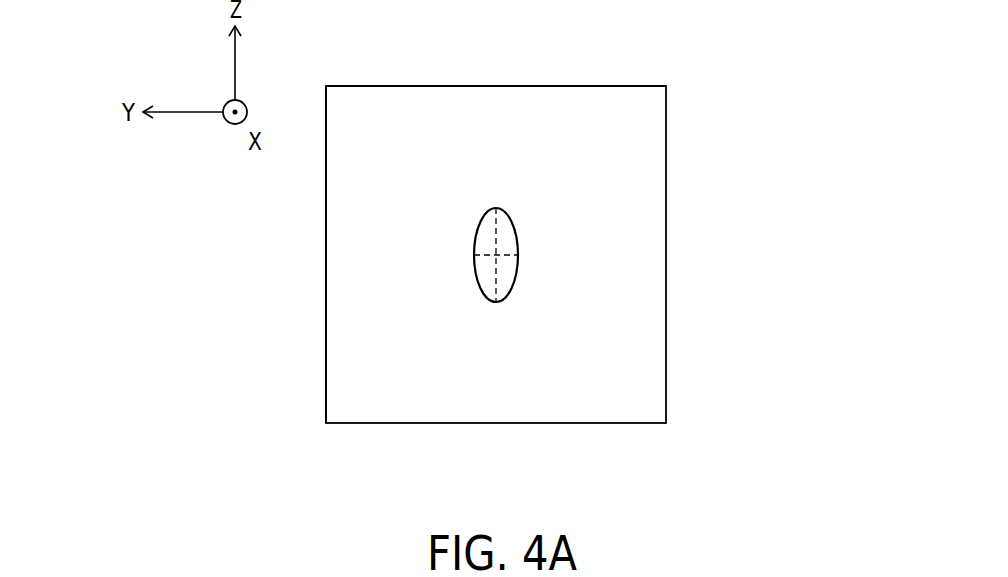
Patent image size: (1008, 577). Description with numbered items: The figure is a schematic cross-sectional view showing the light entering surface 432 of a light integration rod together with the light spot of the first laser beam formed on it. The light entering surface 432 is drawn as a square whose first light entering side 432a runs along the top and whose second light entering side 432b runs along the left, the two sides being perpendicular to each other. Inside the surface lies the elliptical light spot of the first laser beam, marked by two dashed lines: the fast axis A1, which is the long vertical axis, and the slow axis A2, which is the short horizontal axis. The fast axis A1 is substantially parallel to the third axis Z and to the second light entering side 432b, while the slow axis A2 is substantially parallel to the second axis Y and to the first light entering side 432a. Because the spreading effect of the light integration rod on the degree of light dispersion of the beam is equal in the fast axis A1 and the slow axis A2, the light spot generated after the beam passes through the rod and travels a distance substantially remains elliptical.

The light entering surface 432 is at (409, 137).
The first light entering side 432a is at (497, 85).
The second light entering side 432b is at (326, 297).
The fast axis A1 is at (497, 228).
The slow axis A2 is at (507, 252).